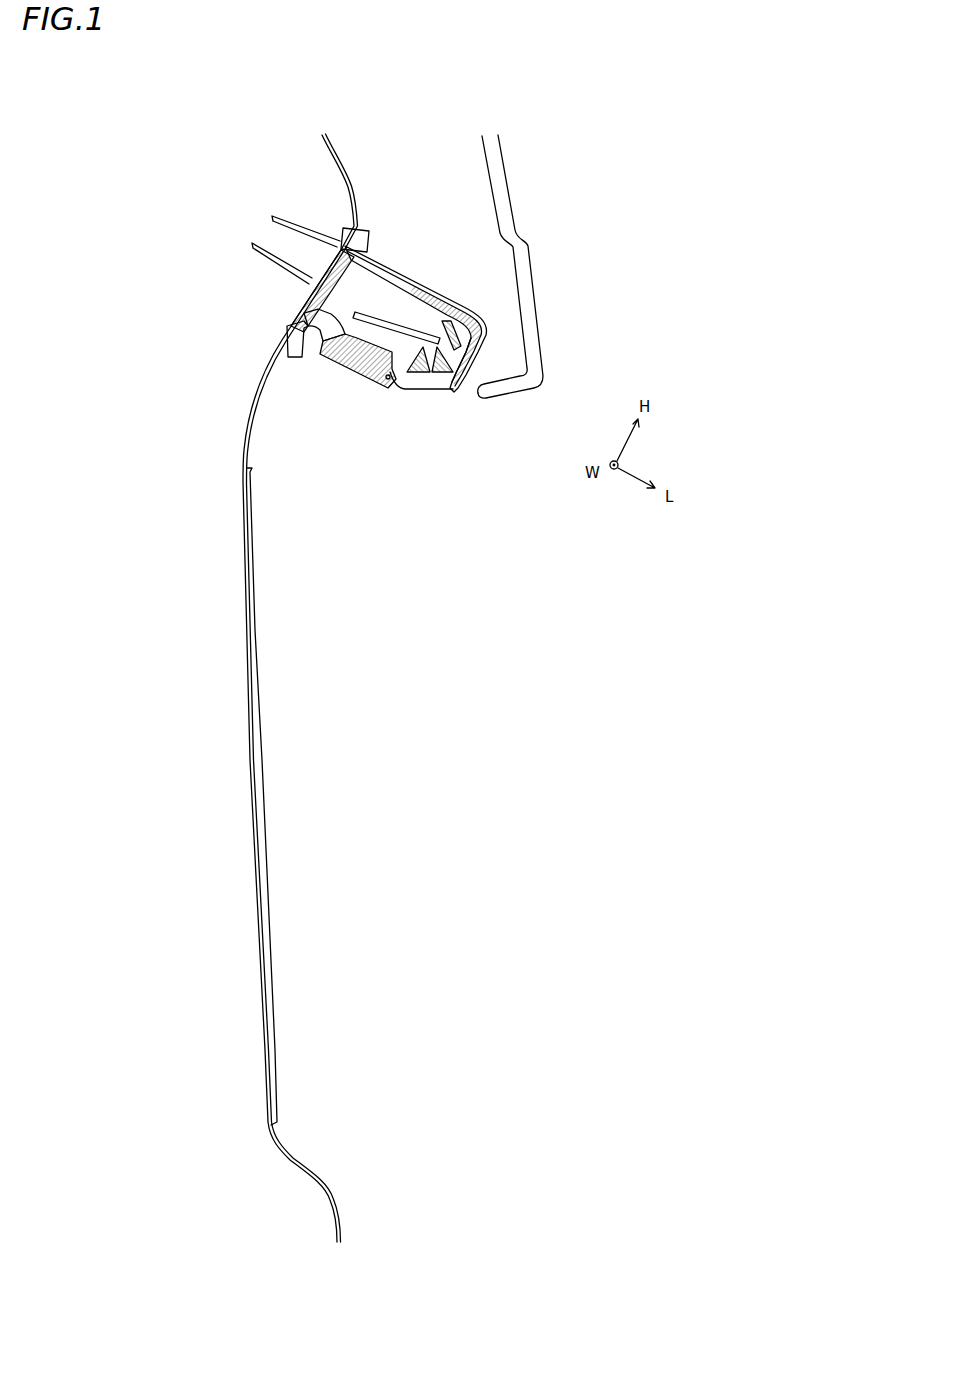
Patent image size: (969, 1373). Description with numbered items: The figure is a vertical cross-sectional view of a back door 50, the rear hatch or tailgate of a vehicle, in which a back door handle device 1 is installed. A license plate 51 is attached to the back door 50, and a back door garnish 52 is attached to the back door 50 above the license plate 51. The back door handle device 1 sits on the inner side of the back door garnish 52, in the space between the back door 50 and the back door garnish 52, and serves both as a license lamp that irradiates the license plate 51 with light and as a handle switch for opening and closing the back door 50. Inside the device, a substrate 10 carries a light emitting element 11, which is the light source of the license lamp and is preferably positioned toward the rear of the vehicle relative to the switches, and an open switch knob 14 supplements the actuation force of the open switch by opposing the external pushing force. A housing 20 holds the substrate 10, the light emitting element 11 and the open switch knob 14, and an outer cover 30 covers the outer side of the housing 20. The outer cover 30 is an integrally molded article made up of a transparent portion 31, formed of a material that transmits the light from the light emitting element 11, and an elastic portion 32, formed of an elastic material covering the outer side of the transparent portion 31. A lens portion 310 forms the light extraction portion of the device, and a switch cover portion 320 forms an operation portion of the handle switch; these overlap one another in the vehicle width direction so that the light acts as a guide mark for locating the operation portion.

The back door handle device 1 is at (478, 293).
The substrate 10 is at (402, 327).
The light emitting element 11 is at (436, 346).
The open switch knob 14 is at (357, 377).
The housing 20 is at (308, 294).
The outer cover 30 is at (447, 216).
The transparent portion 31 is at (377, 272).
The elastic portion 32 is at (420, 290).
The lens portion 310 is at (449, 392).
The switch cover portion 320 is at (340, 362).
The back door 50 is at (247, 415).
The license plate 51 is at (262, 778).
The back door garnish 52 is at (500, 182).